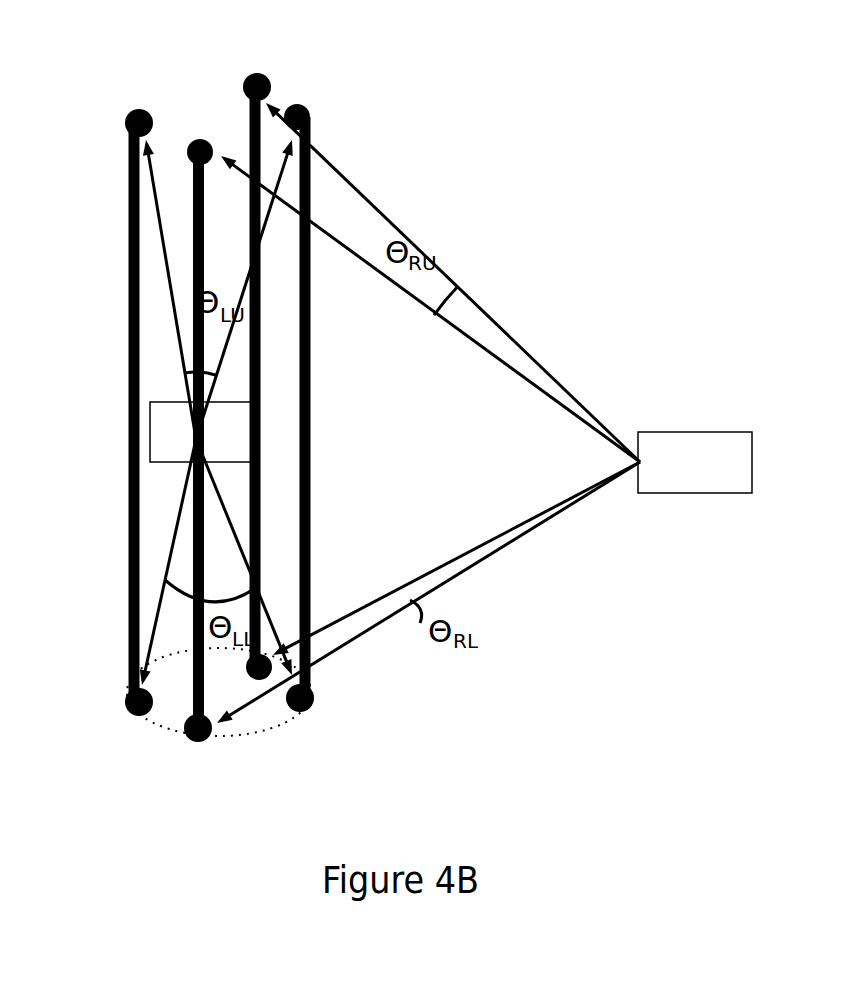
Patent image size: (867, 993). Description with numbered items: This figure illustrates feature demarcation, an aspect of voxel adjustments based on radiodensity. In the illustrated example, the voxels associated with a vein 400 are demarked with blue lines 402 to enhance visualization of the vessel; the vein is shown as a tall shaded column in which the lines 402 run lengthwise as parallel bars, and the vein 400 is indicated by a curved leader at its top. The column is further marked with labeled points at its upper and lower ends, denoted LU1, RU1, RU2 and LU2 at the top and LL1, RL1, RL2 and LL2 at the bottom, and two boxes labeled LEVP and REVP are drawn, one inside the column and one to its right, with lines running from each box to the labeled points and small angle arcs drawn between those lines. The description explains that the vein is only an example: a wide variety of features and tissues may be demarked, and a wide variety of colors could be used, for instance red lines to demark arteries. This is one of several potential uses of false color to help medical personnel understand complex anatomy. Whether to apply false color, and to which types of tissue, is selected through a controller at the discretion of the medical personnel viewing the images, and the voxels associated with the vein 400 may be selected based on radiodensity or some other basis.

The vein 400 is at (188, 102).
The blue lines 402 is at (128, 373).
The left upper point 1 LU1 is at (110, 116).
The right upper point 1 RU1 is at (203, 143).
The right upper point 2 RU2 is at (278, 74).
The left upper point 2 LU2 is at (337, 118).
The left lower point 1 LL1 is at (112, 698).
The right lower point 1 RL1 is at (200, 747).
The right lower point 2 RL2 is at (246, 668).
The left lower point 2 LL2 is at (337, 700).
The left eye viewpoint LEVP is at (203, 432).
The right eye viewpoint REVP is at (695, 462).